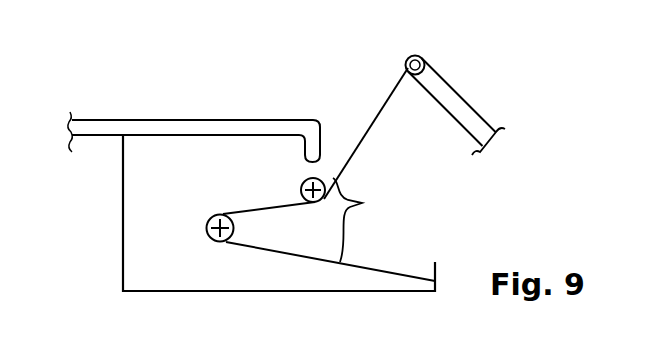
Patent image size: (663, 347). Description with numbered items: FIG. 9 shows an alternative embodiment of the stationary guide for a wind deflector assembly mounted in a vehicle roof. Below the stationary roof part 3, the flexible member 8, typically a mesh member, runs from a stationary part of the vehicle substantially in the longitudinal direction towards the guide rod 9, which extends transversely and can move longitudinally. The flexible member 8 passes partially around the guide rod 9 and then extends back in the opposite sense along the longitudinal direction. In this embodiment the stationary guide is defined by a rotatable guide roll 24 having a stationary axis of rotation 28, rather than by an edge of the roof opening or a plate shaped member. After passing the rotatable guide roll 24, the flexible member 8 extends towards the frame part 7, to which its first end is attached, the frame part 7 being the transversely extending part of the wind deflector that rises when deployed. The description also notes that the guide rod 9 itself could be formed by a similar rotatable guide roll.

The stationary roof part 3 is at (168, 123).
The frame part 7 is at (420, 57).
The flexible member 8 is at (356, 220).
The guide rod 9 is at (233, 222).
The rotatable guide roll 24 is at (302, 180).
The stationary axis of rotation 28 is at (318, 179).